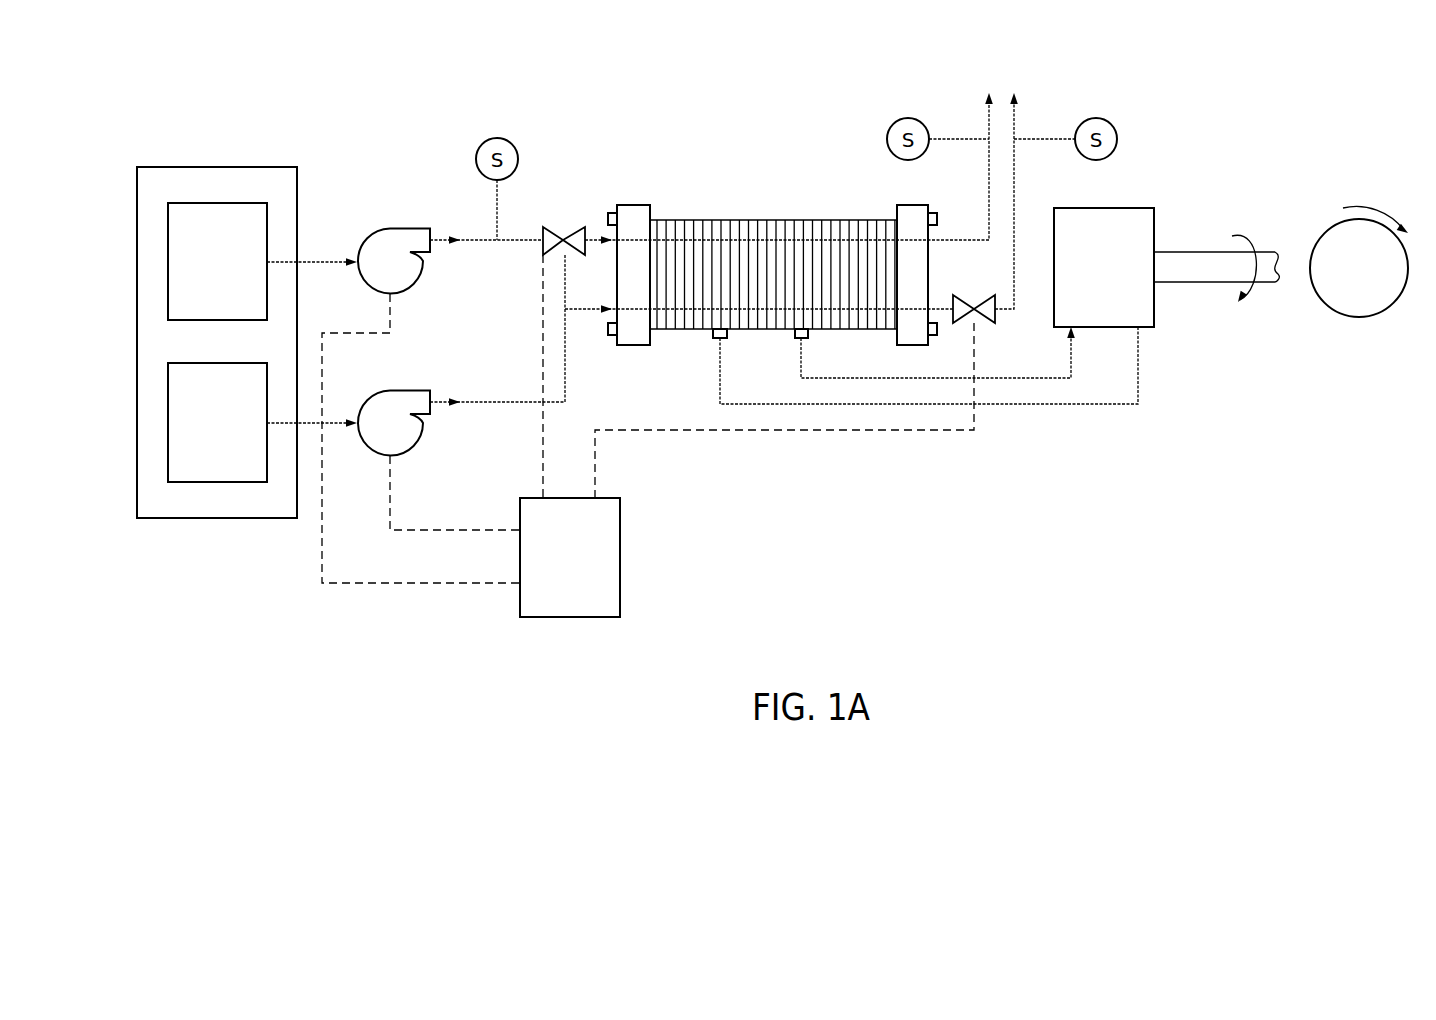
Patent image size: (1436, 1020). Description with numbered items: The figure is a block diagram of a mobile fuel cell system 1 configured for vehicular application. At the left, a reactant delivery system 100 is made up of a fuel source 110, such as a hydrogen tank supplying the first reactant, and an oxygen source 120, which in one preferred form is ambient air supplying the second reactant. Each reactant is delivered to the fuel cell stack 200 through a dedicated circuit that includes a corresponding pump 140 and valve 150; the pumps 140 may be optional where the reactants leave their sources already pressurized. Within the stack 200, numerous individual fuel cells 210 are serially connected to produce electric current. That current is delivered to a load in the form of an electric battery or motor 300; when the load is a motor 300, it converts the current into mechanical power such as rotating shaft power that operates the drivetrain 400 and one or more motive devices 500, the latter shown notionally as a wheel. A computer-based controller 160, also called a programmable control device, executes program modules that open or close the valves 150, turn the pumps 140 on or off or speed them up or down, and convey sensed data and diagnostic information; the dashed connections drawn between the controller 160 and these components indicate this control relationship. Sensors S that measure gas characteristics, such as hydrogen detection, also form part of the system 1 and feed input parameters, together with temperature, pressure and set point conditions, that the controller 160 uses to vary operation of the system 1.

The mobile fuel cell system 1 is at (600, 117).
The reactant delivery system 100 is at (202, 150).
The fuel source 110 is at (197, 272).
The oxygen source 120 is at (197, 436).
The pump 140 is at (408, 228).
The valve 150 is at (560, 230).
The controller 160 is at (548, 571).
The fuel cell stack 200 is at (772, 226).
The individual fuel cell 210 is at (757, 220).
The motor 300 is at (1082, 279).
The drivetrain 400 is at (1192, 251).
The motive device 500 is at (1357, 306).